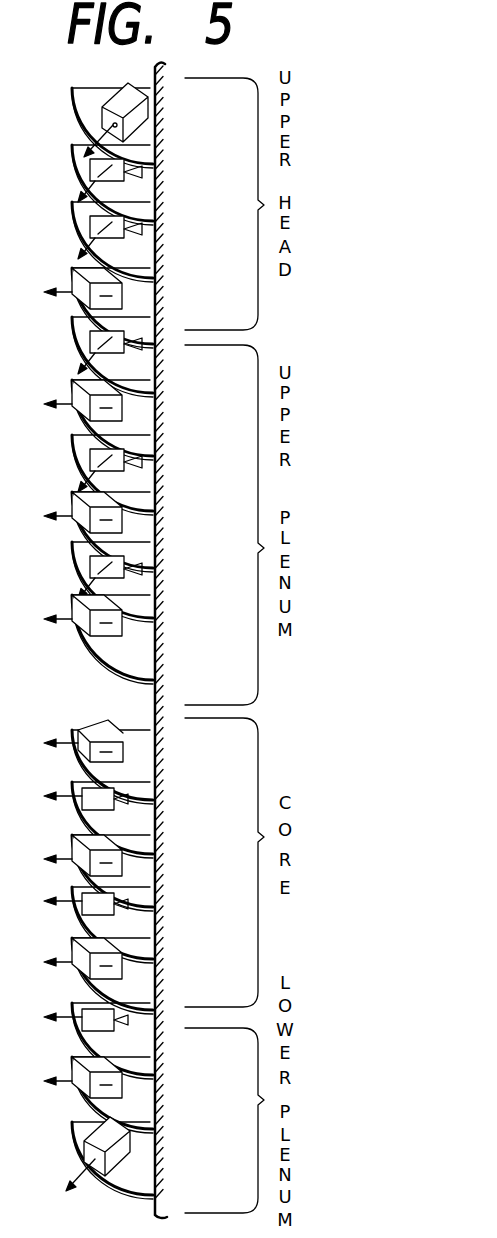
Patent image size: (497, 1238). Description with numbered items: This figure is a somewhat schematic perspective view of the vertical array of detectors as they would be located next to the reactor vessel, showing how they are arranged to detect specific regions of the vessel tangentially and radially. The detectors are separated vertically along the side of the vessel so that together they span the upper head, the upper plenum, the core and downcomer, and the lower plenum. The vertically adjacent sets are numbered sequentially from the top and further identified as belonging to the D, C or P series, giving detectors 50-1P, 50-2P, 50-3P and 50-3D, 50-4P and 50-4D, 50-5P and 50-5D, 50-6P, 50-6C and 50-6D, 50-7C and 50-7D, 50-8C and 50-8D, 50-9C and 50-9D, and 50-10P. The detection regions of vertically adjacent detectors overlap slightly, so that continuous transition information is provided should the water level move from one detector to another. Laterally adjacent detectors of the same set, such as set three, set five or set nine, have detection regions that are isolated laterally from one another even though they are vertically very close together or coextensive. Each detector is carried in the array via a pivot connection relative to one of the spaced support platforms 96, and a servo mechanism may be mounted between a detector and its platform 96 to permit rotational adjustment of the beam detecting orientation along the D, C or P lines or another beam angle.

The support platform 96 is at (76, 152).
The detector 50-1P is at (157, 120).
The detector 50-2P is at (154, 180).
The detector 50-3P is at (154, 240).
The detector 50-3D is at (139, 290).
The detector 50-4P is at (154, 360).
The detector 50-4D is at (139, 405).
The detector 50-5P is at (154, 470).
The detector 50-5D is at (139, 516).
The detector 50-6P is at (154, 577).
The detector 50-6D is at (139, 624).
The detector 50-6C is at (138, 752).
The detector 50-7C is at (138, 806).
The detector 50-7D is at (139, 857).
The detector 50-8C is at (138, 912).
The detector 50-8D is at (139, 969).
The detector 50-9C is at (138, 1035).
The detector 50-9D is at (139, 1088).
The detector 50-10P is at (155, 1154).